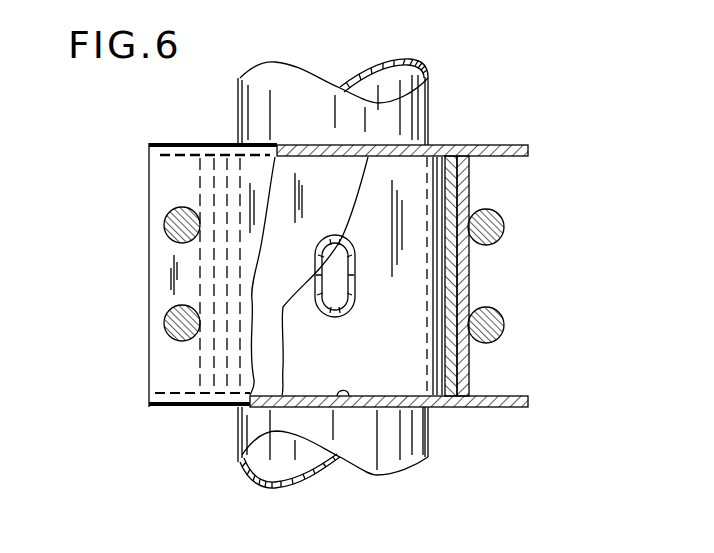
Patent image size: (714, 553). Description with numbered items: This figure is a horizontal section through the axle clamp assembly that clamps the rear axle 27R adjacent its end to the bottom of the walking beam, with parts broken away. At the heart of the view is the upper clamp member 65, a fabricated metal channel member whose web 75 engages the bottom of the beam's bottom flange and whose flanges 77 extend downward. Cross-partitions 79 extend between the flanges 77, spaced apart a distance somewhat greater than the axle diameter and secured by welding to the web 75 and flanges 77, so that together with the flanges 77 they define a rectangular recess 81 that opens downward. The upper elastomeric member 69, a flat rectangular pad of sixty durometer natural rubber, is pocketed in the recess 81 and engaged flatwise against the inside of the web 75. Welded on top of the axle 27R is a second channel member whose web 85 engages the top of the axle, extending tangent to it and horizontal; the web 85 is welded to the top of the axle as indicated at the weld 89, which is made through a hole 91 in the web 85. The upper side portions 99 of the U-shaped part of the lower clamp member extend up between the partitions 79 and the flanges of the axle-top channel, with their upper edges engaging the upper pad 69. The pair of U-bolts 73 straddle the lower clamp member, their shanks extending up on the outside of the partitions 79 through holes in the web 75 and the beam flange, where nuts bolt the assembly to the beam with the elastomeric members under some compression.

The rear axle 27R is at (428, 107).
The upper clamp member 65 is at (263, 247).
The upper elastomeric member 69 is at (317, 178).
The U-bolts 73 is at (173, 243).
The web 75 is at (167, 173).
The flanges 77 is at (528, 148).
The cross-partitions 79 is at (472, 180).
The rectangular recess 81 is at (348, 396).
The web 85 is at (403, 277).
The weld 89 is at (350, 293).
The hole 91 is at (335, 317).
The upper side portions 99 is at (447, 372).